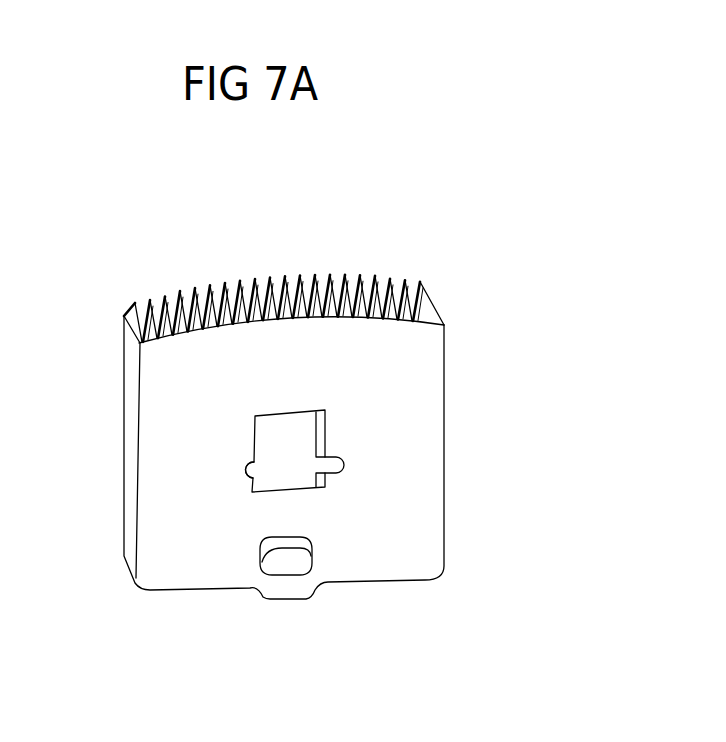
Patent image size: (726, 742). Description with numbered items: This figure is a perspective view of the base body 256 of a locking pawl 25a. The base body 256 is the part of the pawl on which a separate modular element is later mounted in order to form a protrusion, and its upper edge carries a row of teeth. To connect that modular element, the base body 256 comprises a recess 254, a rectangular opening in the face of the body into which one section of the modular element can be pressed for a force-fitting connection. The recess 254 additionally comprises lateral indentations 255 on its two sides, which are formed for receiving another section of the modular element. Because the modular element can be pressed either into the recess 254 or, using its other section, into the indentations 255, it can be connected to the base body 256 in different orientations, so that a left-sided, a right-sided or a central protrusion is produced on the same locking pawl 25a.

The locking pawl 25a is at (296, 258).
The base body 256 is at (167, 376).
The recess 254 is at (275, 464).
The lateral indentations 255 is at (248, 463).